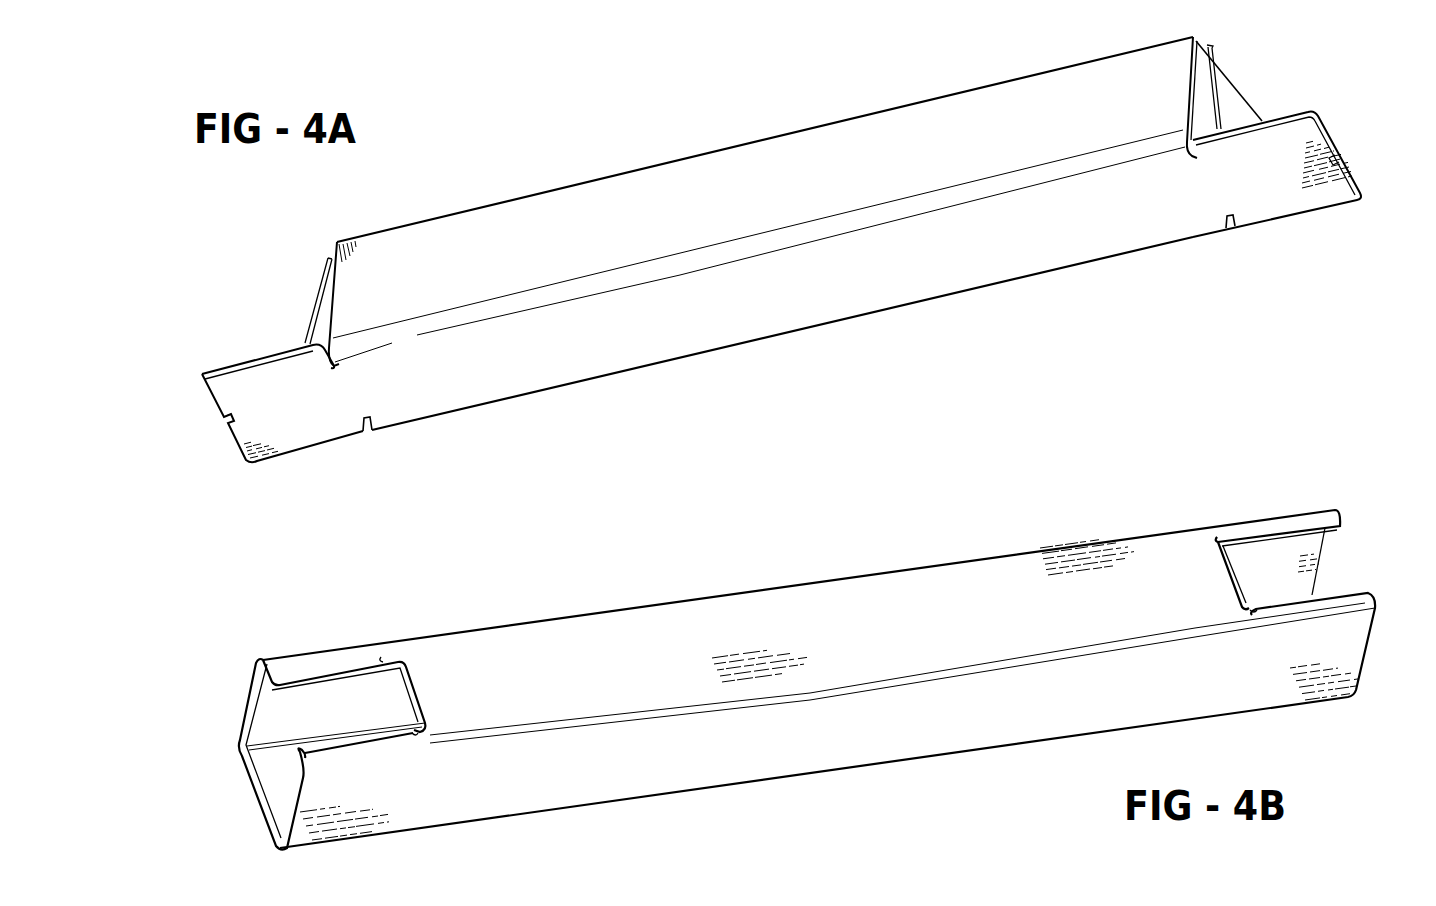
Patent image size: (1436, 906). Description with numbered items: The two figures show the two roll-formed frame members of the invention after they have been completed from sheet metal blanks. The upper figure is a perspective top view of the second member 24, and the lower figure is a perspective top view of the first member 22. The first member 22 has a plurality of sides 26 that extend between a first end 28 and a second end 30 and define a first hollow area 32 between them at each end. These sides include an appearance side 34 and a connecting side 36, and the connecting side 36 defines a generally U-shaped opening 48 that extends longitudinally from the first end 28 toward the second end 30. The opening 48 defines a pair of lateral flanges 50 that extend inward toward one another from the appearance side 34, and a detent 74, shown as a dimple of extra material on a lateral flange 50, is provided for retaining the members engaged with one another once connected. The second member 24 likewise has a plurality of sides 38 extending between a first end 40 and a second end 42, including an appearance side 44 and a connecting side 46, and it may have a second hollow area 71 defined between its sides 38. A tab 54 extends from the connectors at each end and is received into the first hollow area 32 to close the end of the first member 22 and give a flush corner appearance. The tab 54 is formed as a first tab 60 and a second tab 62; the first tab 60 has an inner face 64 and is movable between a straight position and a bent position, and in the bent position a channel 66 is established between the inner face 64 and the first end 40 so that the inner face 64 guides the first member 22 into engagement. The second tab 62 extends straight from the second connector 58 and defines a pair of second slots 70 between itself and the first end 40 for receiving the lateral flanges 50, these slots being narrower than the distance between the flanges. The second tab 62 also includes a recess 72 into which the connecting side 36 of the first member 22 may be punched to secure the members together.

In FIG. 4B, the first member 22 is at (747, 589).
In FIG. 4A, the second member 24 is at (613, 172).
In FIG. 4B, the plurality of sides 26 is at (984, 593).
In FIG. 4B, the first end 28 is at (263, 657).
In FIG. 4B, the second end 30 is at (1325, 507).
In FIG. 4B, the first hollow area 32 is at (289, 717).
In FIG. 4B, the appearance side 34 is at (835, 725).
In FIG. 4B, the connecting side 36 is at (815, 610).
In FIG. 4A, the plurality of sides 38 is at (747, 166).
In FIG. 4A, the first end 40 is at (333, 236).
In FIG. 4A, the second end 42 is at (1192, 37).
In FIG. 4A, the appearance side 44 is at (760, 190).
In FIG. 4A, the connecting side 46 is at (762, 285).
In FIG. 4B, the opening 48 is at (343, 665).
In FIG. 4B, the lateral flanges 50 is at (310, 662).
In FIG. 4A, the tab 54 is at (1260, 117).
In FIG. 4A, the second connector 58 is at (340, 390).
In FIG. 4A, the first tab 60 is at (318, 292).
In FIG. 4A, the second tab 62 is at (222, 382).
In FIG. 4A, the inner face 64 is at (325, 322).
In FIG. 4A, the channel 66 is at (1204, 110).
In FIG. 4A, the second slot 70 is at (370, 417).
In FIG. 4A, the second hollow area 71 is at (338, 412).
In FIG. 4A, the recess 72 is at (224, 420).
In FIG. 4B, the detent 74 is at (381, 656).